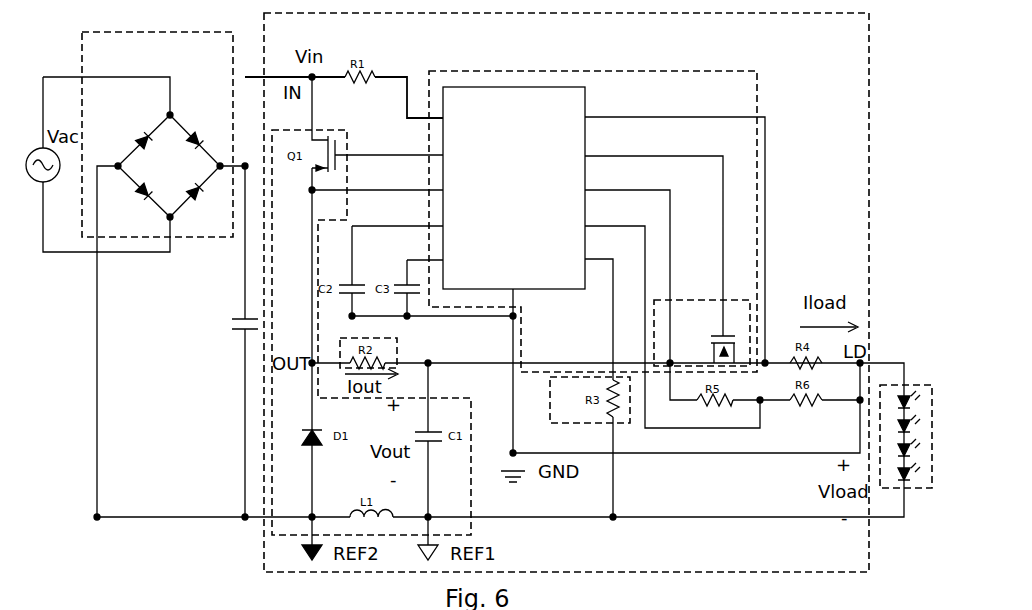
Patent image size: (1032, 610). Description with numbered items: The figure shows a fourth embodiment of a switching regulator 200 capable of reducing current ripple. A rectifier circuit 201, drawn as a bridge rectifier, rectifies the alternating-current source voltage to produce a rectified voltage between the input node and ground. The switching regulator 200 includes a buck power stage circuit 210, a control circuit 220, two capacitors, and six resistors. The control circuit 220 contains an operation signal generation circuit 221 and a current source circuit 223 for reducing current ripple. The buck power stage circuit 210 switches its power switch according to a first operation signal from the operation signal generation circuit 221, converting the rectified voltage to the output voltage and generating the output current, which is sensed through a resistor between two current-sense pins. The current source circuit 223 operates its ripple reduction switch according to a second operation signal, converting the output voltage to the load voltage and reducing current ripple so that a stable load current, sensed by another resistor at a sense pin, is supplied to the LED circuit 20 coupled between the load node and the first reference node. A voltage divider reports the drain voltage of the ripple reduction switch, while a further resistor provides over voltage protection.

The switching regulator 200 is at (857, 50).
The rectifier circuit 201 is at (127, 64).
The buck power stage circuit 210 is at (468, 514).
The control circuit 220 is at (740, 97).
The operation signal generation circuit 221 is at (527, 119).
The current source circuit 223 is at (684, 300).
The LED circuit 20 is at (917, 386).